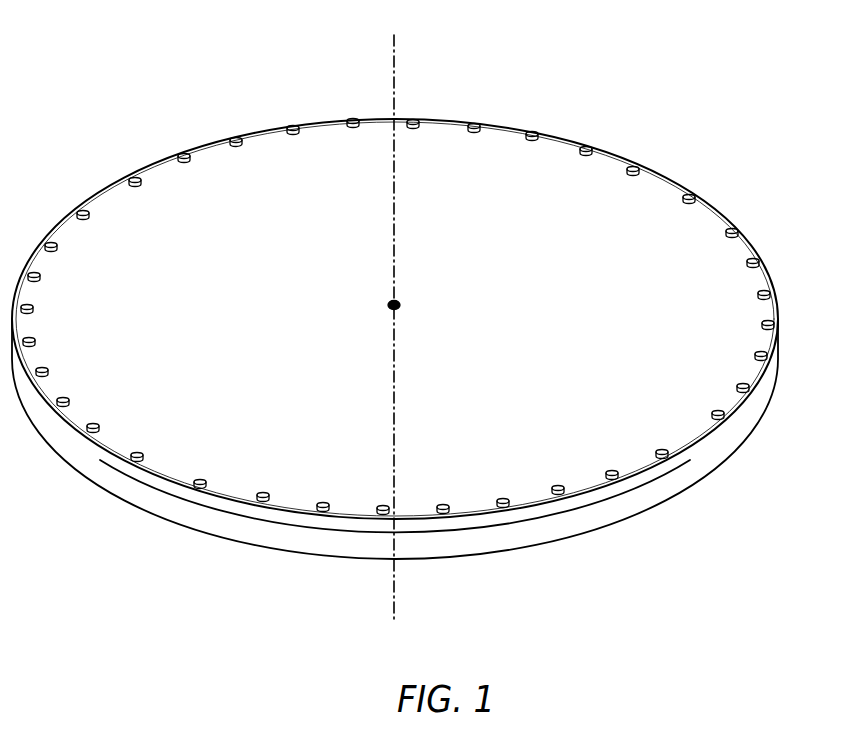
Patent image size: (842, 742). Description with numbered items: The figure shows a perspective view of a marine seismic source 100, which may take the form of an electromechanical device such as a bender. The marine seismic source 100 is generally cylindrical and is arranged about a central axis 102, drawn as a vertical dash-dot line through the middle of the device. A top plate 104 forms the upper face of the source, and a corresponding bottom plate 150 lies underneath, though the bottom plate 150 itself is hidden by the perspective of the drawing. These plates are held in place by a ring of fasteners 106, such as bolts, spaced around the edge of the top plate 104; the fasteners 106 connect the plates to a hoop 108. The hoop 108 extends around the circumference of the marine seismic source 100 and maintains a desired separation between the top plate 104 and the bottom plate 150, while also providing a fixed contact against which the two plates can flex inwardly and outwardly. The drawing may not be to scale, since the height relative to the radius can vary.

The marine seismic source 100 is at (150, 128).
The axis 102 is at (395, 70).
The top plate 104 is at (497, 207).
The fasteners 106 is at (505, 508).
The hoop 108 is at (655, 483).
The bottom plate 150 is at (180, 552).